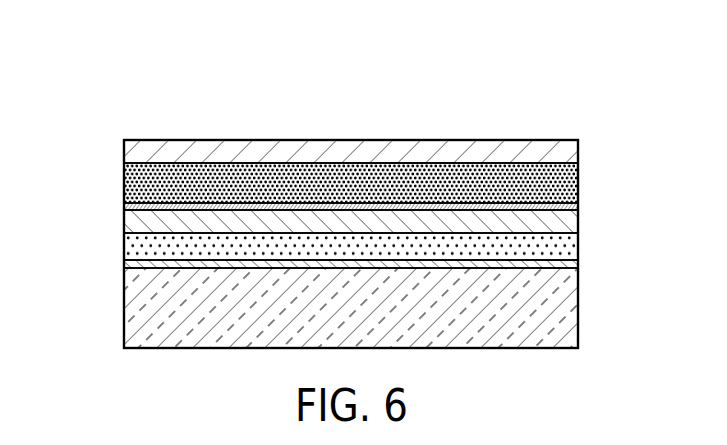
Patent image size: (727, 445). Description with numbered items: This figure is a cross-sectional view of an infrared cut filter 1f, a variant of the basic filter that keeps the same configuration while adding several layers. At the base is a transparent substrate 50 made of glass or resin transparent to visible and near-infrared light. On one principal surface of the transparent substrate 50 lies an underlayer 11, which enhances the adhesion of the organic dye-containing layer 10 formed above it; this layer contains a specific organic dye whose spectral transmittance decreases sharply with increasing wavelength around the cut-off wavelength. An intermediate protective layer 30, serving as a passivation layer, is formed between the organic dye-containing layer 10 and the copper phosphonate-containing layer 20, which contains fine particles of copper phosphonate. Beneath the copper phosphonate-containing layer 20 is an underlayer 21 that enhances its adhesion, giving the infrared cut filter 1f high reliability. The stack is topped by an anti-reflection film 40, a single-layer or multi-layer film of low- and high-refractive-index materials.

The infrared cut filter 1f is at (483, 100).
The anti-reflection film 40 is at (557, 155).
The copper phosphonate-containing layer 20 is at (557, 187).
The underlayer 21 is at (135, 206).
The intermediate protective layer 30 is at (557, 222).
The organic dye-containing layer 10 is at (557, 248).
The underlayer 11 is at (135, 264).
The transparent substrate 50 is at (557, 297).